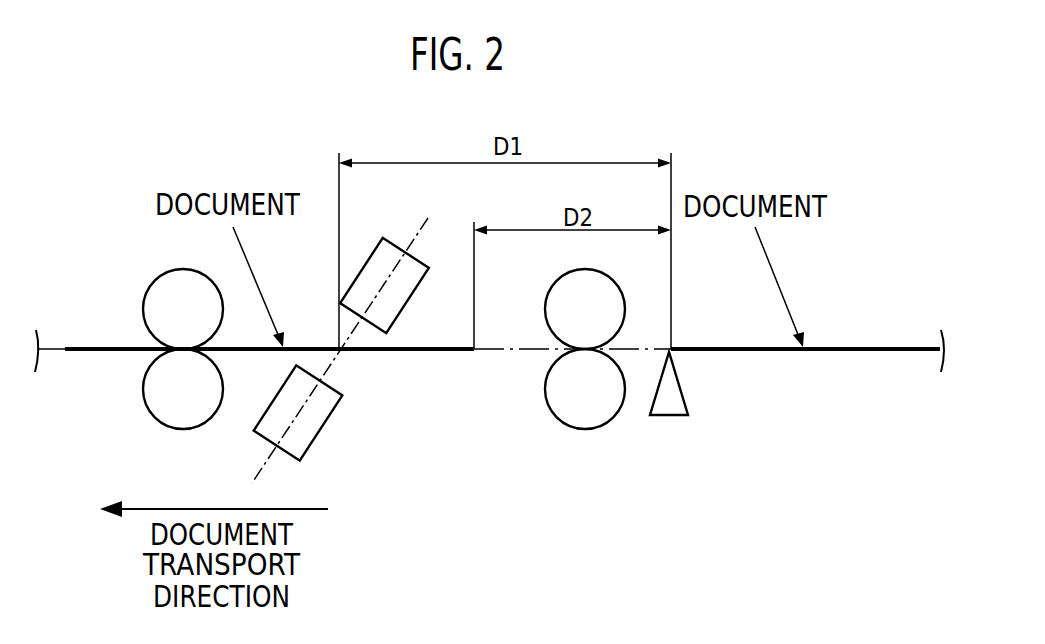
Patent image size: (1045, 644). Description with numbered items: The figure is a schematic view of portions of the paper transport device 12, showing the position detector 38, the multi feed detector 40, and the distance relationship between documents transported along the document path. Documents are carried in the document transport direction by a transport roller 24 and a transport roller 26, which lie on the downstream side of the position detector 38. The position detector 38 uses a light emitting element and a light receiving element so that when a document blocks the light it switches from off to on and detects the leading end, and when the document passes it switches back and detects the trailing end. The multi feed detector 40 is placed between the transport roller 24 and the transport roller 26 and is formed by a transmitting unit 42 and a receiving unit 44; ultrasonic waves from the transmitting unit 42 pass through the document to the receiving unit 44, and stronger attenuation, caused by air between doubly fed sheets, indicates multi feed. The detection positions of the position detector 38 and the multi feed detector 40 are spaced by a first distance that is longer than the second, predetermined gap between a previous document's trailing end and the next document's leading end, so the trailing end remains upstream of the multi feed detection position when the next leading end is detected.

The image reading device 12 is at (860, 226).
The transport roller 24 is at (602, 285).
The transport roller 26 is at (157, 295).
The position detector 38 is at (681, 397).
The multi feed detector 40 is at (315, 288).
The transmitting unit 42 is at (380, 243).
The receiving unit 44 is at (308, 437).